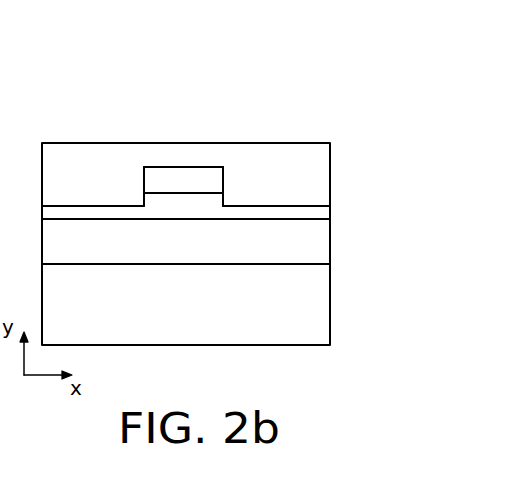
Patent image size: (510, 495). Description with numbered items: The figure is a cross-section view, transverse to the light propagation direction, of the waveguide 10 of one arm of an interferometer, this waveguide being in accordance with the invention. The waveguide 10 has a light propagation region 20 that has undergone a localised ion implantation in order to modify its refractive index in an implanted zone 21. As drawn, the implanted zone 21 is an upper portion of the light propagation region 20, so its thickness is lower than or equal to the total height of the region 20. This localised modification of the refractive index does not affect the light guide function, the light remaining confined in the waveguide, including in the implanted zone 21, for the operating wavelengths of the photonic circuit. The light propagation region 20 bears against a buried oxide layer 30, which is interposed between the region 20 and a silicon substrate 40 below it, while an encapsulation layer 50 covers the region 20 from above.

The waveguide 10 is at (201, 213).
The light propagation region 20 is at (275, 210).
The implanted zone 21 is at (192, 180).
The buried oxide layer 30 is at (275, 250).
The silicon substrate 40 is at (217, 315).
The encapsulation layer 50 is at (105, 163).